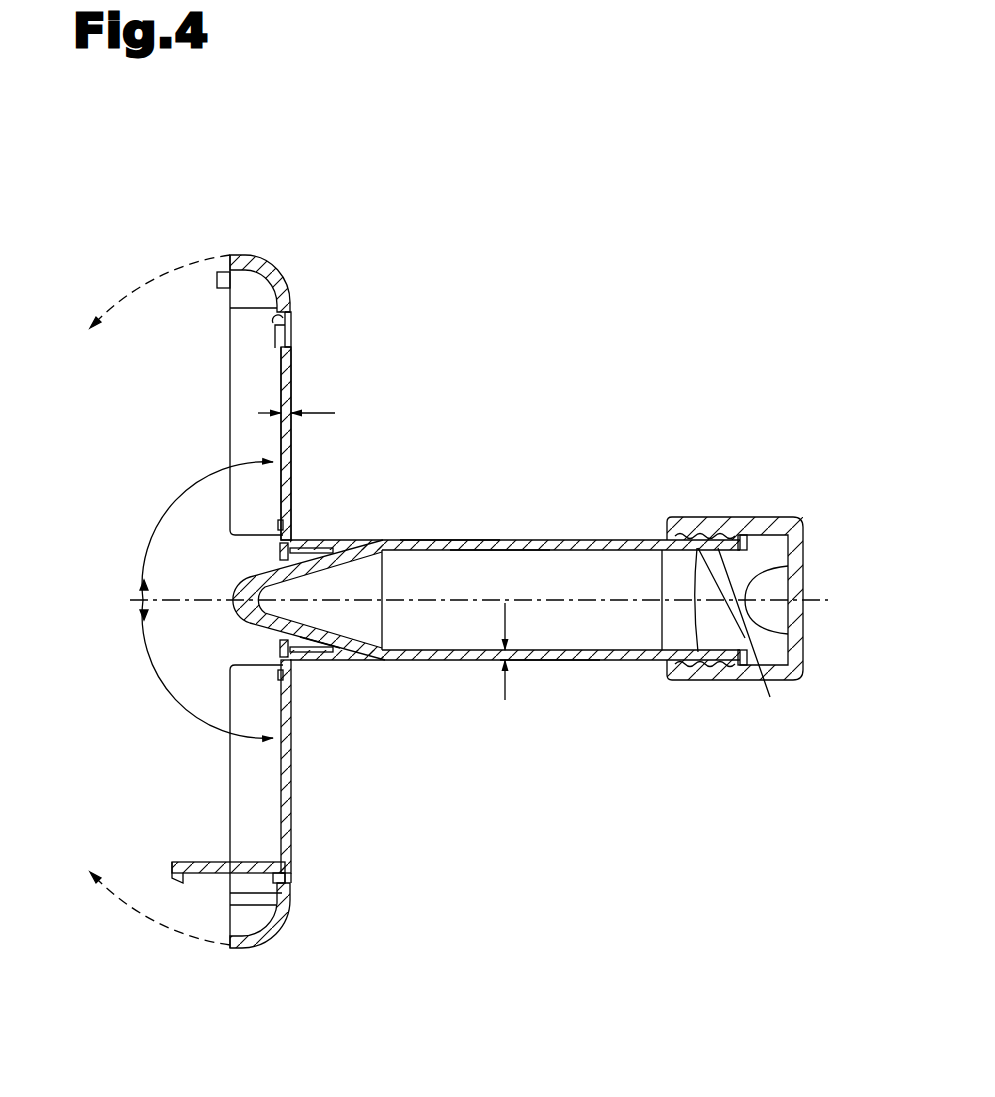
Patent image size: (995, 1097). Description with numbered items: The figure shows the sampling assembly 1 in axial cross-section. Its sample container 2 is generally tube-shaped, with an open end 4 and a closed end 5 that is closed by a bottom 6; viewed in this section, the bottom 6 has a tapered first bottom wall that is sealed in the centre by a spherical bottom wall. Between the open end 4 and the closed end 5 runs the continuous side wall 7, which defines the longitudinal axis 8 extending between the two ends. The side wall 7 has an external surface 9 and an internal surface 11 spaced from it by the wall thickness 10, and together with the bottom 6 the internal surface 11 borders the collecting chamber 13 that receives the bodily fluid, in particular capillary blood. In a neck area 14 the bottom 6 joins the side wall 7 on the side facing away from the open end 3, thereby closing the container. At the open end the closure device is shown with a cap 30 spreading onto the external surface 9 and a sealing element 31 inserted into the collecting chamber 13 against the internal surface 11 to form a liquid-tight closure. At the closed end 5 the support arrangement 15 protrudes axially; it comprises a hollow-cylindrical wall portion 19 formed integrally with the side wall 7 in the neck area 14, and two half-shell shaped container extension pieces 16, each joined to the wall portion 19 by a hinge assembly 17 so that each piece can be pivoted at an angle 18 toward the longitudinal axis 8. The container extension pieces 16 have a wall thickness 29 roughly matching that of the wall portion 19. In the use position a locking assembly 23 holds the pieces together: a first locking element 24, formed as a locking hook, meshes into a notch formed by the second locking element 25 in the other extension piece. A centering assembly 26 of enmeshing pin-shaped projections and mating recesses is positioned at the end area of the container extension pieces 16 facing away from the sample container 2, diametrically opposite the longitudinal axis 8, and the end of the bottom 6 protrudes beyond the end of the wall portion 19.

The sampling assembly 1 is at (541, 283).
The sample container 2 is at (575, 528).
The open end 3 is at (807, 513).
The open end 4 is at (738, 662).
The closed end 5 is at (220, 622).
The bottom 6 is at (146, 586).
The side wall 7 is at (495, 545).
The longitudinal axis 8 is at (818, 597).
The external surface 9 is at (448, 533).
The wall thickness 10 is at (514, 699).
The internal surface 11 is at (560, 646).
The collecting chamber 13 is at (633, 630).
The neck area 14 is at (348, 668).
The support arrangement 15 is at (172, 307).
The container extension piece 16 is at (255, 376).
The hinge assembly 17 is at (292, 539).
The angle 18 is at (178, 515).
The wall portion 19 is at (312, 547).
The locking assembly 23 is at (198, 878).
The first locking element 24 is at (200, 863).
The second locking element 25 is at (282, 338).
The centering assembly 26 is at (212, 265).
The wall thickness 29 is at (318, 401).
The cap 30 is at (722, 527).
The sealing element 31 is at (730, 613).